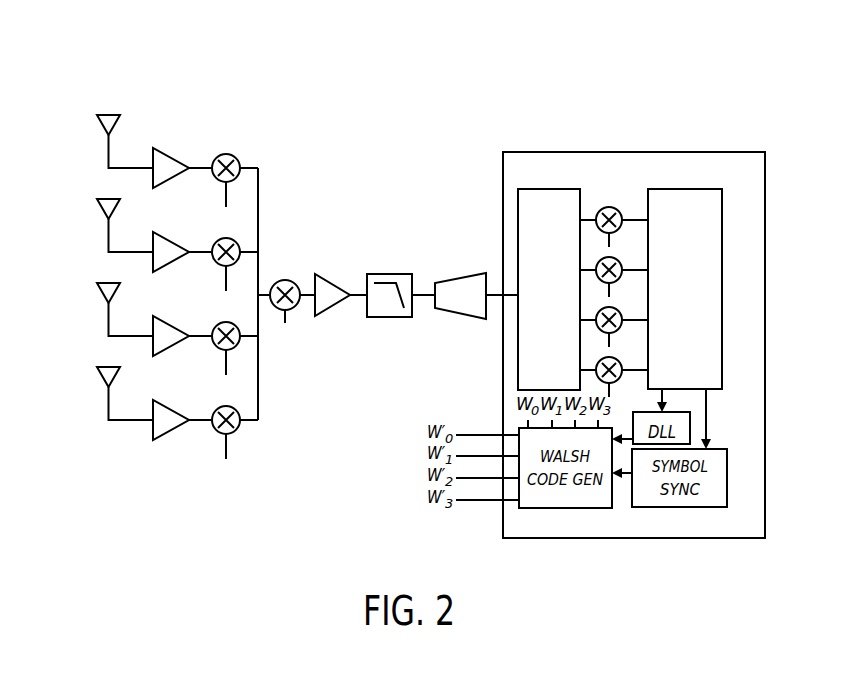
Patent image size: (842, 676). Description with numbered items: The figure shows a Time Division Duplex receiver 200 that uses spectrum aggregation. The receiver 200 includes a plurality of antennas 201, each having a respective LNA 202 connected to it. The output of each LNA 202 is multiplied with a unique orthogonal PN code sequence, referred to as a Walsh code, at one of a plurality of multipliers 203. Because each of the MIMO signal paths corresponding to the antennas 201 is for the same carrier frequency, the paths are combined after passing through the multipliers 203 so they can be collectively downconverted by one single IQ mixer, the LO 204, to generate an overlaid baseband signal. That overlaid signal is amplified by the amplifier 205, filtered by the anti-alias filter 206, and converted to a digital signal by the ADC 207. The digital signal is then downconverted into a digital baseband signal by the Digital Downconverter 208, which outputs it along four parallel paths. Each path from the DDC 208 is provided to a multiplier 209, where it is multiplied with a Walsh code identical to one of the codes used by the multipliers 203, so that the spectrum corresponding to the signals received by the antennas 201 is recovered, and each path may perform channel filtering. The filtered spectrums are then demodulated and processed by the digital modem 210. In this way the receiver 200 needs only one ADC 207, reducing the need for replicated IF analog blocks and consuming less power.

The TDD receiver 200 is at (755, 84).
The antennas 201 is at (100, 122).
The LNA 202 is at (177, 161).
The multipliers 203 is at (238, 158).
The LO 204 is at (293, 282).
The amplifier 205 is at (331, 279).
The anti-alias filter 206 is at (383, 274).
The ADC 207 is at (462, 278).
The Digital Downconverter (DDC) 208 is at (549, 189).
The multiplier 209 is at (598, 259).
The digital modem 210 is at (686, 189).